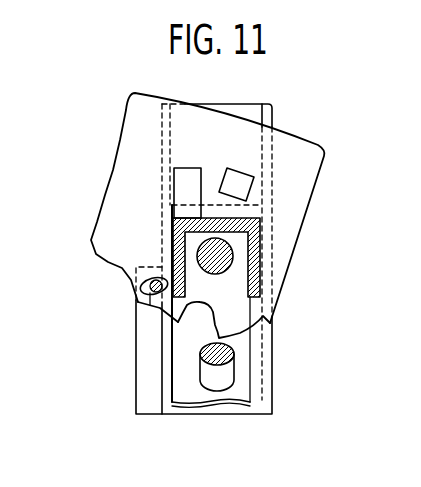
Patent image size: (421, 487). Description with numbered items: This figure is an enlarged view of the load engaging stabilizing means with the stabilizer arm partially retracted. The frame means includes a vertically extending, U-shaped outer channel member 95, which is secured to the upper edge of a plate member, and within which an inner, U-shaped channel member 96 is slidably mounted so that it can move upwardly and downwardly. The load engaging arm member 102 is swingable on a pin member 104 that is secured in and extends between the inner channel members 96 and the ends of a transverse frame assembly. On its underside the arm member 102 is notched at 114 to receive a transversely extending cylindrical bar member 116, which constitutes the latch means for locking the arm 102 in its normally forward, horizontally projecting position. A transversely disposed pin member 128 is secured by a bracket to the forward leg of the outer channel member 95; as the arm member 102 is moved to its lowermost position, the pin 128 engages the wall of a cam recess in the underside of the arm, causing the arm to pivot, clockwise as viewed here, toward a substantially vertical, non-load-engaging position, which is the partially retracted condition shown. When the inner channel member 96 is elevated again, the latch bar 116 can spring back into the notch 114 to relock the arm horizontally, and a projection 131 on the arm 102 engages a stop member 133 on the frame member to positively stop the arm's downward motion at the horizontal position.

The outer channel member 95 is at (273, 408).
The inner channel member 96 is at (178, 395).
The arm member 102 is at (137, 108).
The pin member 104 is at (230, 268).
The notch 114 is at (187, 300).
The cylindrical bar member 116 is at (225, 372).
The pin member 128 is at (147, 287).
The projection 131 is at (247, 180).
The stop member 133 is at (186, 178).